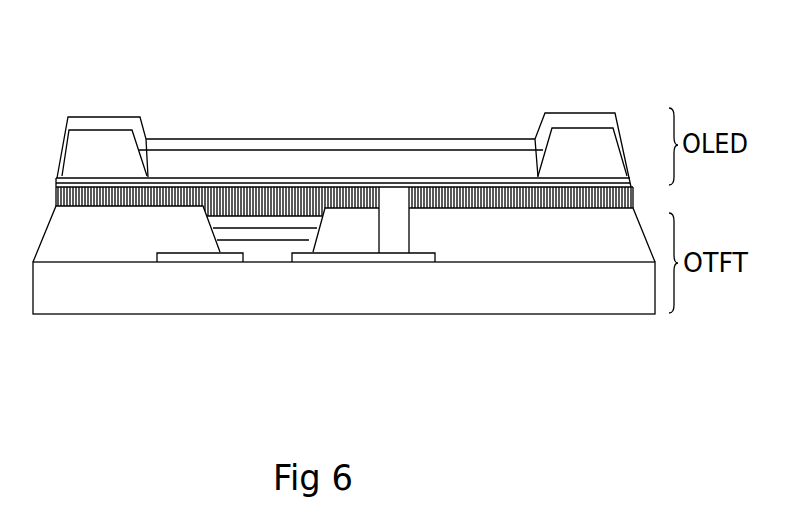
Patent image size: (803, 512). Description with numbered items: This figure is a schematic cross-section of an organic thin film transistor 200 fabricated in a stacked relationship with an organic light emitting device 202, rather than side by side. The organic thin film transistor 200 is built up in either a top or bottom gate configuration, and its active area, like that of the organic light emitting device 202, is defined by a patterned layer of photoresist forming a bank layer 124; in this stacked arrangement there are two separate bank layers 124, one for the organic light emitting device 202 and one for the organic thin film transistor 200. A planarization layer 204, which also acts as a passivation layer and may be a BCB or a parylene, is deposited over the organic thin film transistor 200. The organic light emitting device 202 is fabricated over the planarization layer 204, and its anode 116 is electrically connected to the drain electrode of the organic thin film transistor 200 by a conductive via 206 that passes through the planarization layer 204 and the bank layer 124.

The organic light emitting device 202 is at (179, 114).
The anode 116 is at (423, 160).
The bank layer 124 is at (95, 162).
The organic thin film transistor 200 is at (278, 323).
The planarization layer 204 is at (286, 212).
The conductive via 206 is at (413, 238).